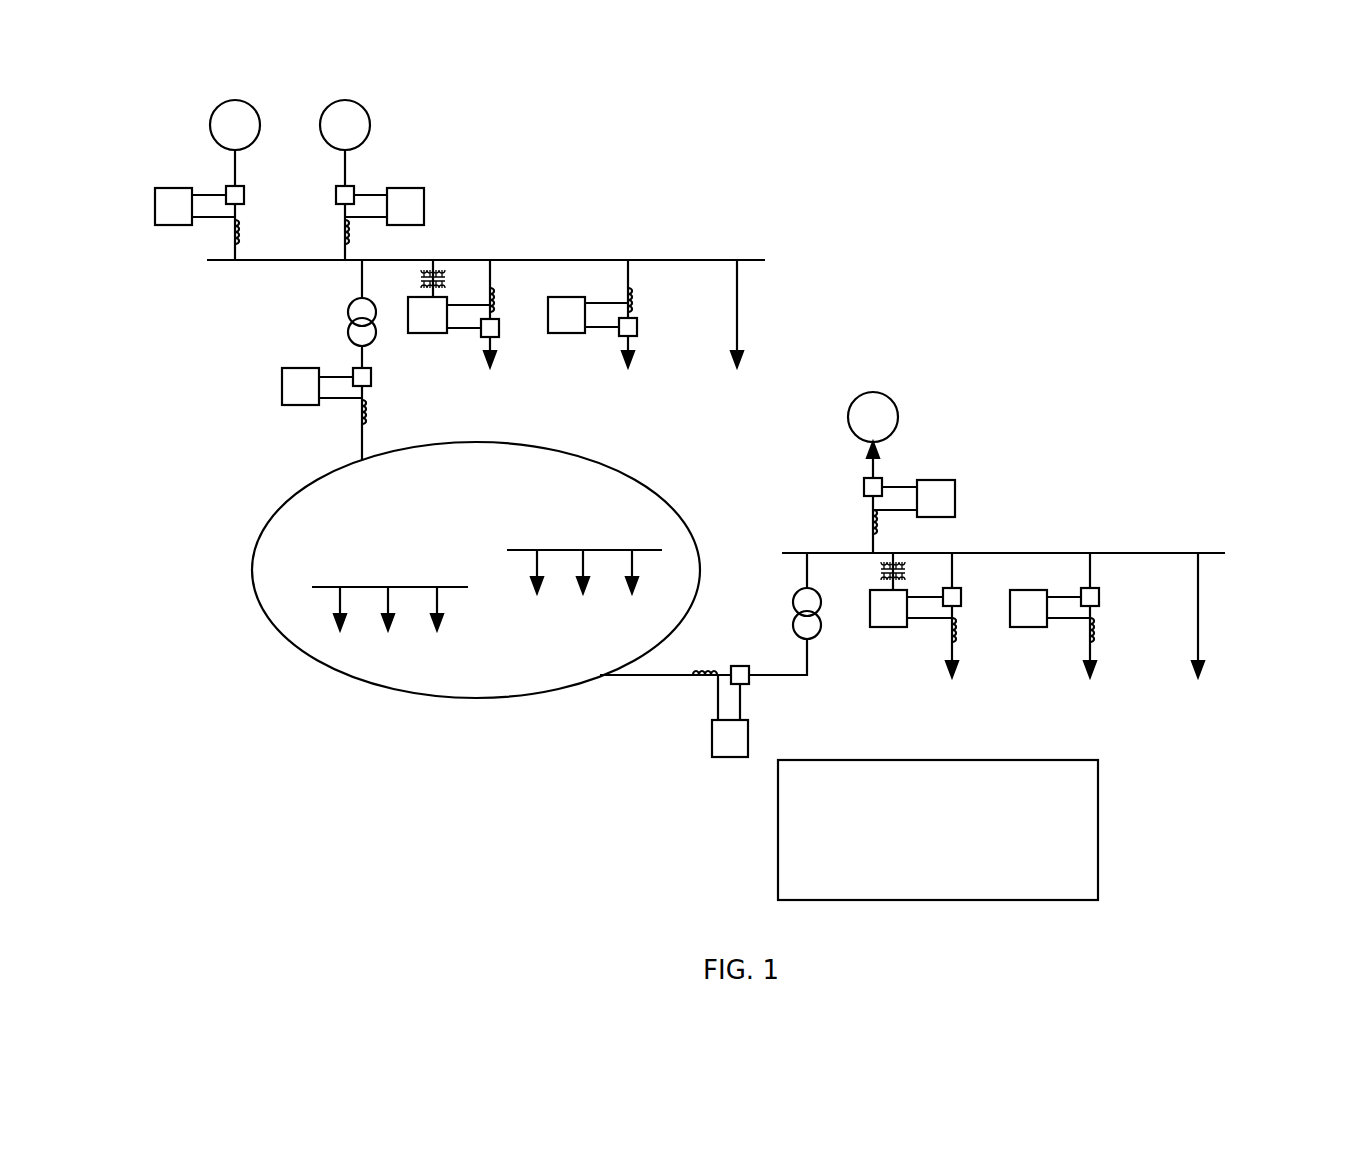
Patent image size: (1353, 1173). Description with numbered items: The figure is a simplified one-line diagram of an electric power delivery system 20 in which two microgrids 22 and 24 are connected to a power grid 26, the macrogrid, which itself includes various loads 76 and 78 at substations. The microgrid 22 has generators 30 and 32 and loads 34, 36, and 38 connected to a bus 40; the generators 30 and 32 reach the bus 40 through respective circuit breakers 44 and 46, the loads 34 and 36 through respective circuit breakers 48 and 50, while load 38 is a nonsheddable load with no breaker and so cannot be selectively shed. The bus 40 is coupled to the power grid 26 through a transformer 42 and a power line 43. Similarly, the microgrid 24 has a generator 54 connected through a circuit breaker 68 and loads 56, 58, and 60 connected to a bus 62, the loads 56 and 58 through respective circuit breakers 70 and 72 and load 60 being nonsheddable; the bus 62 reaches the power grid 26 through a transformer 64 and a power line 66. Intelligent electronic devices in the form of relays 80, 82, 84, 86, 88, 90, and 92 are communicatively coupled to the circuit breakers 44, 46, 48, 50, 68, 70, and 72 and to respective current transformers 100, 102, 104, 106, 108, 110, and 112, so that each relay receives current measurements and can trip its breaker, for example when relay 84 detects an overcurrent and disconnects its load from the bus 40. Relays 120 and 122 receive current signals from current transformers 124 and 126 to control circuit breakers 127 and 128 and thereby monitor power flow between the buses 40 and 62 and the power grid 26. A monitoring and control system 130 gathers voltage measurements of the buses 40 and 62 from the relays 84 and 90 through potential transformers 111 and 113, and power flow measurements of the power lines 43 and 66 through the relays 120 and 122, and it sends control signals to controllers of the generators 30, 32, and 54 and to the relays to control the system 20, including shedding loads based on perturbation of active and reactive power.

The electric power delivery system 20 is at (1107, 162).
The microgrid 22 is at (632, 147).
The microgrid 24 is at (1228, 420).
The power grid 26 is at (452, 697).
The generator 30 is at (210, 128).
The generator 32 is at (370, 128).
The load 34 is at (481, 346).
The load 36 is at (620, 347).
The load 38 is at (740, 298).
The bus 40 is at (510, 260).
The transformer 42 is at (349, 322).
The power line 43 is at (362, 450).
The circuit breaker 44 is at (226, 190).
The circuit breaker 46 is at (336, 196).
The circuit breaker 48 is at (499, 328).
The circuit breaker 50 is at (637, 327).
The generator 54 is at (875, 392).
The load 56 is at (945, 675).
The load 58 is at (1085, 675).
The load 60 is at (1200, 627).
The bus 62 is at (1185, 553).
The transformer 64 is at (795, 603).
The power line 66 is at (775, 677).
The circuit breaker 68 is at (864, 487).
The circuit breaker 70 is at (961, 597).
The circuit breaker 72 is at (1099, 597).
The load 76 is at (397, 569).
The load 78 is at (562, 516).
The relay 80 is at (155, 205).
The relay 82 is at (424, 213).
The relay 84 is at (410, 300).
The relay 86 is at (563, 334).
The relay 88 is at (956, 506).
The relay 90 is at (885, 627).
The relay 92 is at (1025, 627).
The current transformer 100 is at (240, 228).
The current transformer 102 is at (338, 232).
The current transformer 104 is at (495, 298).
The current transformer 106 is at (636, 298).
The current transformer 108 is at (868, 520).
The current transformer 110 is at (958, 640).
The potential transformer 111 is at (442, 286).
The current transformer 112 is at (1099, 638).
The potential transformer 113 is at (877, 580).
The relay 120 is at (282, 387).
The relay 122 is at (712, 742).
The current transformer 124 is at (370, 415).
The current transformer 126 is at (700, 667).
The circuit breaker 127 is at (372, 382).
The circuit breaker 128 is at (741, 666).
The monitoring and control system 130 is at (1098, 828).